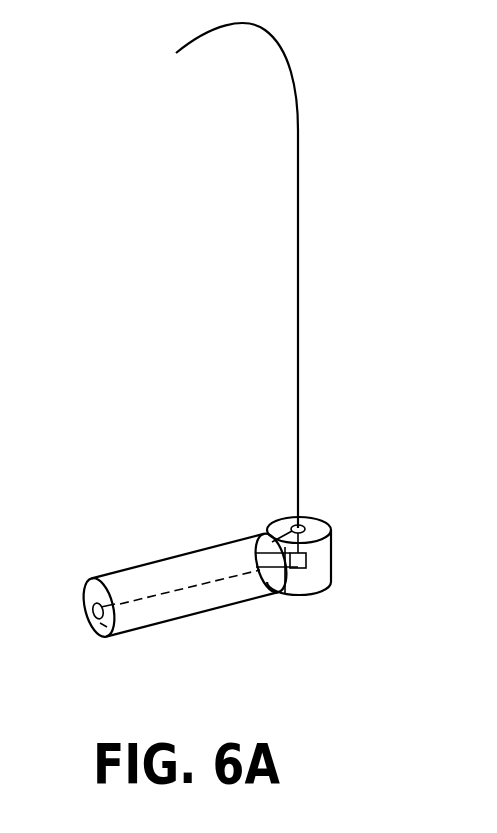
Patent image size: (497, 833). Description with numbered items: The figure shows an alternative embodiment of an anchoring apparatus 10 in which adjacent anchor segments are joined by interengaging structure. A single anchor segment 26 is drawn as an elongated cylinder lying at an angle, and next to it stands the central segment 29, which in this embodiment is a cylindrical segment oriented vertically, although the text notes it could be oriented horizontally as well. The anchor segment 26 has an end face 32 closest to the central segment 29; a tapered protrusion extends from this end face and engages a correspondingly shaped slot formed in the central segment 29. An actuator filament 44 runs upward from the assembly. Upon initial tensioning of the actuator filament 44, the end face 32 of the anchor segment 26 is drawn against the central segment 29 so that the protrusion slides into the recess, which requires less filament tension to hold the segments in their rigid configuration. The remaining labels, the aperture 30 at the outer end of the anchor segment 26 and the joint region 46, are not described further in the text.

The device assembly 10 is at (341, 287).
The anchor segment 26 is at (160, 573).
The central segment 29 is at (313, 597).
The end aperture 30 is at (96, 636).
The end face 32 is at (310, 525).
The actuator filament 44 is at (137, 597).
The connection joint 46 is at (249, 521).